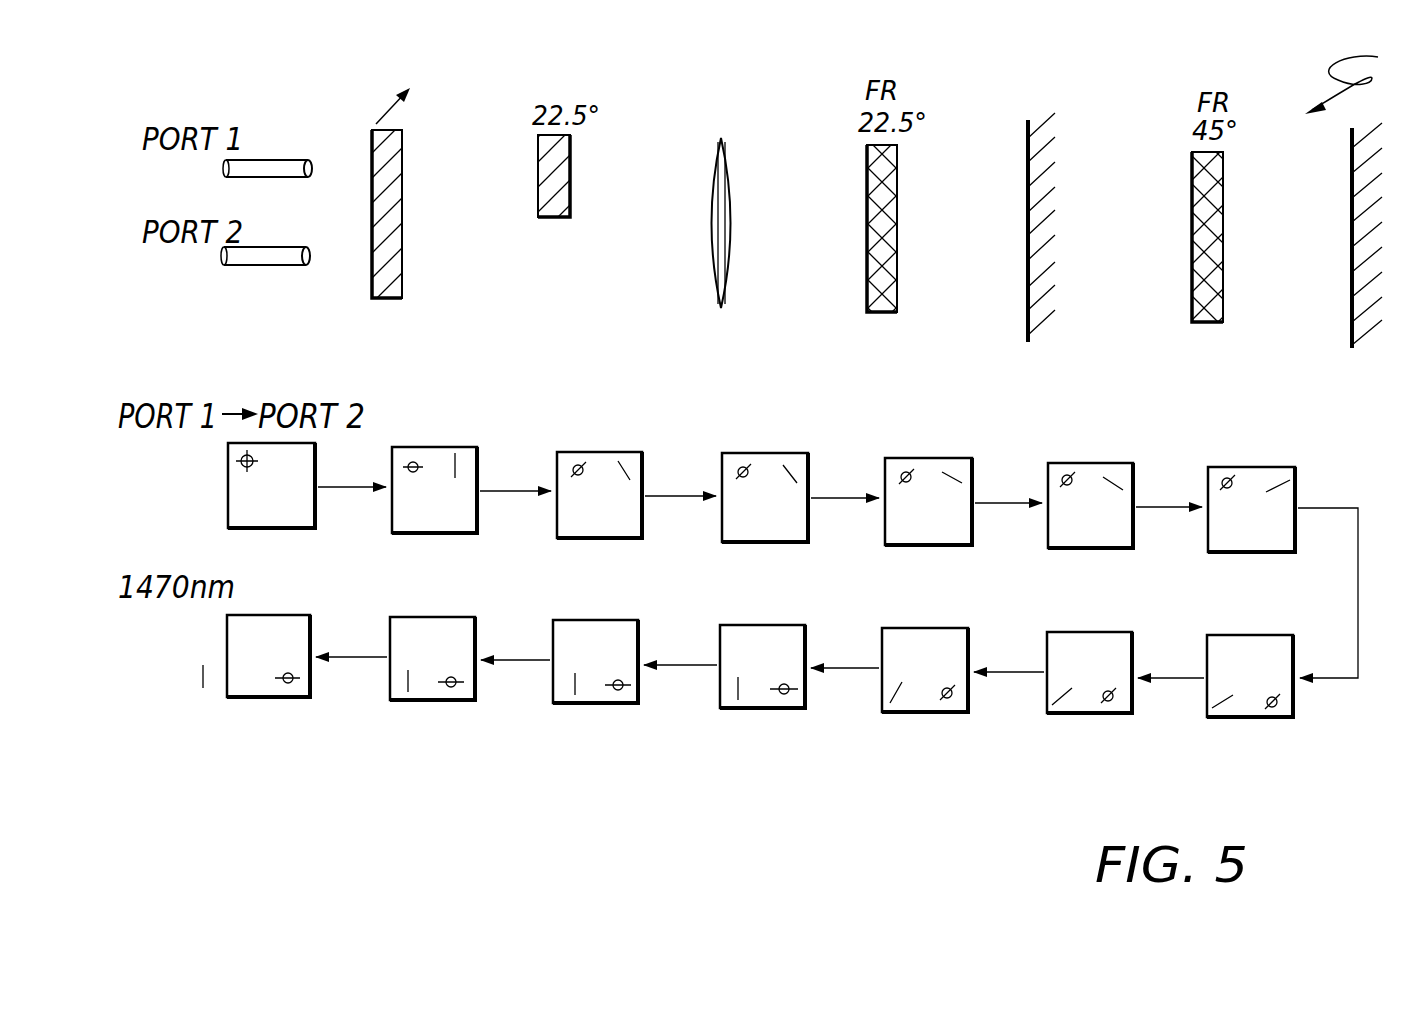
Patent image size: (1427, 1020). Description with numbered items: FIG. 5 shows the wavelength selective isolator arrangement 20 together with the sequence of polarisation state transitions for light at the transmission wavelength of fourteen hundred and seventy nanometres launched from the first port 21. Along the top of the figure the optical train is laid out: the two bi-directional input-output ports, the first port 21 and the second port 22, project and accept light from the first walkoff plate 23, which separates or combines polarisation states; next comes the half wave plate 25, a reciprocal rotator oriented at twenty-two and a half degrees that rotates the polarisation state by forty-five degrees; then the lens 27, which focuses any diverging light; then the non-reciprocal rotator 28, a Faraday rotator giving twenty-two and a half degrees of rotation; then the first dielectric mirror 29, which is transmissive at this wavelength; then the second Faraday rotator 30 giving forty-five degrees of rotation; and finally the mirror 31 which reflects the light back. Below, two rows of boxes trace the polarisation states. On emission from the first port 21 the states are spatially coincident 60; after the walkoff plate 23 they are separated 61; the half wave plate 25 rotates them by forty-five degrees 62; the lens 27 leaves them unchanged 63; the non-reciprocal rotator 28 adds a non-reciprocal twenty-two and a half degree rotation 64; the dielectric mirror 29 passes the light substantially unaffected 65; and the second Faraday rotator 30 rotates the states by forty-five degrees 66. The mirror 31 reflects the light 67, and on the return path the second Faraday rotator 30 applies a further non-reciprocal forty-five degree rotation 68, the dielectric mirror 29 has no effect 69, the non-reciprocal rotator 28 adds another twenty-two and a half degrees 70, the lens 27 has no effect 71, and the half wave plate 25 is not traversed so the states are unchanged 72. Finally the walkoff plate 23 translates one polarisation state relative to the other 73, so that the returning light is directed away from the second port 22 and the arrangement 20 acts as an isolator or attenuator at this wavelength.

The arrangement 20 is at (1364, 77).
The Port 1 21 is at (290, 160).
The Port 2 22 is at (276, 266).
The first walkoff plate 23 is at (402, 287).
The half wave plate 25 is at (552, 218).
The lens 27 is at (710, 282).
The non-reciprocal rotator 28 is at (867, 289).
The first dielectric mirror 29 is at (1028, 297).
The second Faraday rotator 30 is at (1192, 300).
The mirror 31 is at (1352, 305).
The polarisation state 60 is at (282, 530).
The polarisation state 61 is at (428, 534).
The polarisation state 62 is at (588, 539).
The polarisation state 63 is at (750, 543).
The polarisation state 64 is at (910, 547).
The polarisation state 65 is at (1090, 531).
The polarisation state 66 is at (1240, 553).
The polarisation state 67 is at (1262, 718).
The polarisation state 68 is at (1110, 714).
The polarisation state 69 is at (945, 713).
The polarisation state 70 is at (790, 710).
The polarisation state 71 is at (618, 704).
The polarisation state 72 is at (412, 701).
The polarisation state 73 is at (250, 698).